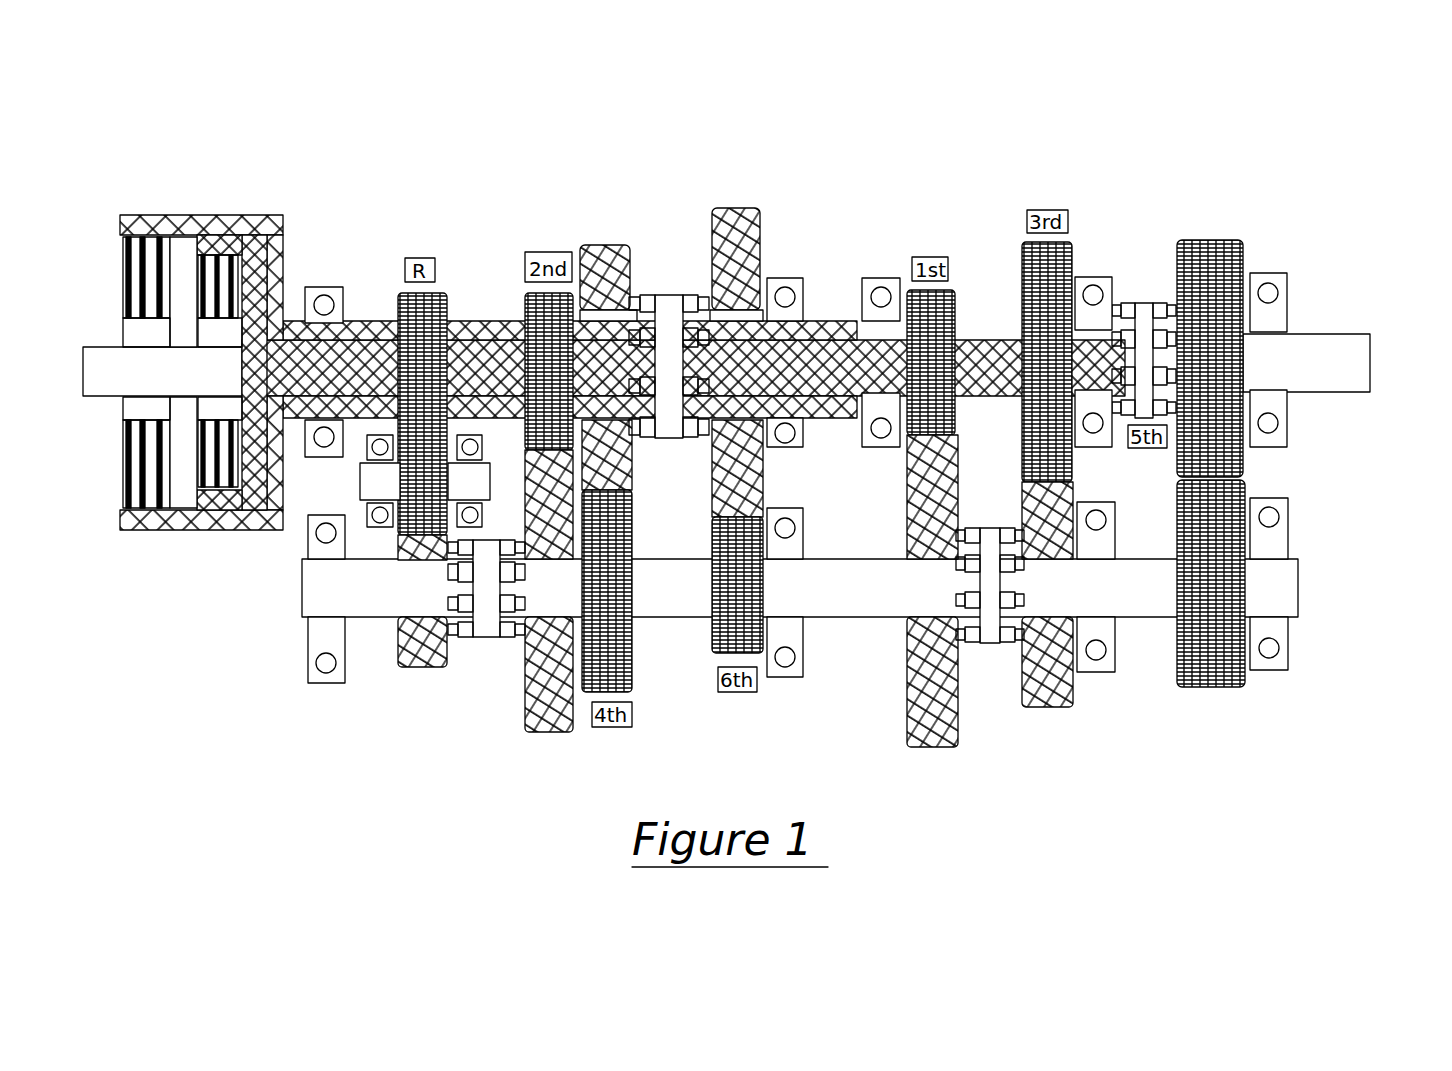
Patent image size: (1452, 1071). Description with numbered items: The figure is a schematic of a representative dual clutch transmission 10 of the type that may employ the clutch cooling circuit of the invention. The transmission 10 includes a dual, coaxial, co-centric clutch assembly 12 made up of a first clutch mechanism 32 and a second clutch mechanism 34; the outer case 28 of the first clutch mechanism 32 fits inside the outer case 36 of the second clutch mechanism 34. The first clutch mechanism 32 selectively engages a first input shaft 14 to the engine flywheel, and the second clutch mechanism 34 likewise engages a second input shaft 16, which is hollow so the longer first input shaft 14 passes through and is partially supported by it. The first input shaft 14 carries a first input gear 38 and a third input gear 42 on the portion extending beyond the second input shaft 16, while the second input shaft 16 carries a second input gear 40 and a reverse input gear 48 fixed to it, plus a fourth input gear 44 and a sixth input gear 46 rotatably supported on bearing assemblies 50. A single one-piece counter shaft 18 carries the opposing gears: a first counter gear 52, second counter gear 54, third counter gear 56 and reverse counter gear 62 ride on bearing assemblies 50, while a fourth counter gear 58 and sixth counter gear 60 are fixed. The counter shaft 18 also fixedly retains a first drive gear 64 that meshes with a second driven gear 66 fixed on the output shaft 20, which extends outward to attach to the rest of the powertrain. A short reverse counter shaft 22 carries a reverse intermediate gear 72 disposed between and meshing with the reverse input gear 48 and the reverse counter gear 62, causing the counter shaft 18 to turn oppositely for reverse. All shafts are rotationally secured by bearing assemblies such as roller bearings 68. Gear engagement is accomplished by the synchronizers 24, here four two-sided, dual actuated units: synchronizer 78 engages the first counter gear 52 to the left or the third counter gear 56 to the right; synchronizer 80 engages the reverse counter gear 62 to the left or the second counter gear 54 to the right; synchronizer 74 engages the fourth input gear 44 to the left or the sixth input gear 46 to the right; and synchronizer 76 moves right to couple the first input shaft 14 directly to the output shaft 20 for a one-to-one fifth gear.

The dual clutch transmission 10 is at (516, 188).
The dual, coaxial, co-centric clutch assembly 12 is at (224, 315).
The first input shaft 14 is at (990, 337).
The second input shaft 16 is at (345, 332).
The counter shaft 18 is at (310, 595).
The output shaft 20 is at (1362, 353).
The reverse counter shaft 22 is at (310, 500).
The synchronizers 24 is at (692, 250).
The outer case of the first clutch mechanism 28 is at (256, 275).
The first clutch mechanism 32 is at (236, 242).
The second clutch mechanism 34 is at (155, 245).
The outer case of the second clutch mechanism 36 is at (285, 243).
The first input gear 38 is at (960, 295).
The second input gear 40 is at (525, 302).
The third input gear 42 is at (1073, 252).
The fourth input gear 44 is at (617, 247).
The sixth input gear 46 is at (760, 216).
The reverse input gear 48 is at (447, 305).
The bearing assemblies 50 is at (400, 627).
The first counter gear 52 is at (910, 673).
The second counter gear 54 is at (574, 730).
The third counter gear 56 is at (1043, 700).
The fourth counter gear 58 is at (633, 668).
The sixth counter gear 60 is at (710, 640).
The reverse counter gear 62 is at (407, 660).
The first drive gear 64 is at (1182, 660).
The second driven gear 66 is at (1225, 253).
The roller bearings 68 is at (893, 283).
The reverse intermediate gear 72 is at (410, 480).
The synchronizer 74 is at (667, 298).
The synchronizer 76 is at (1143, 317).
The synchronizer 78 is at (991, 635).
The synchronizer 80 is at (485, 636).